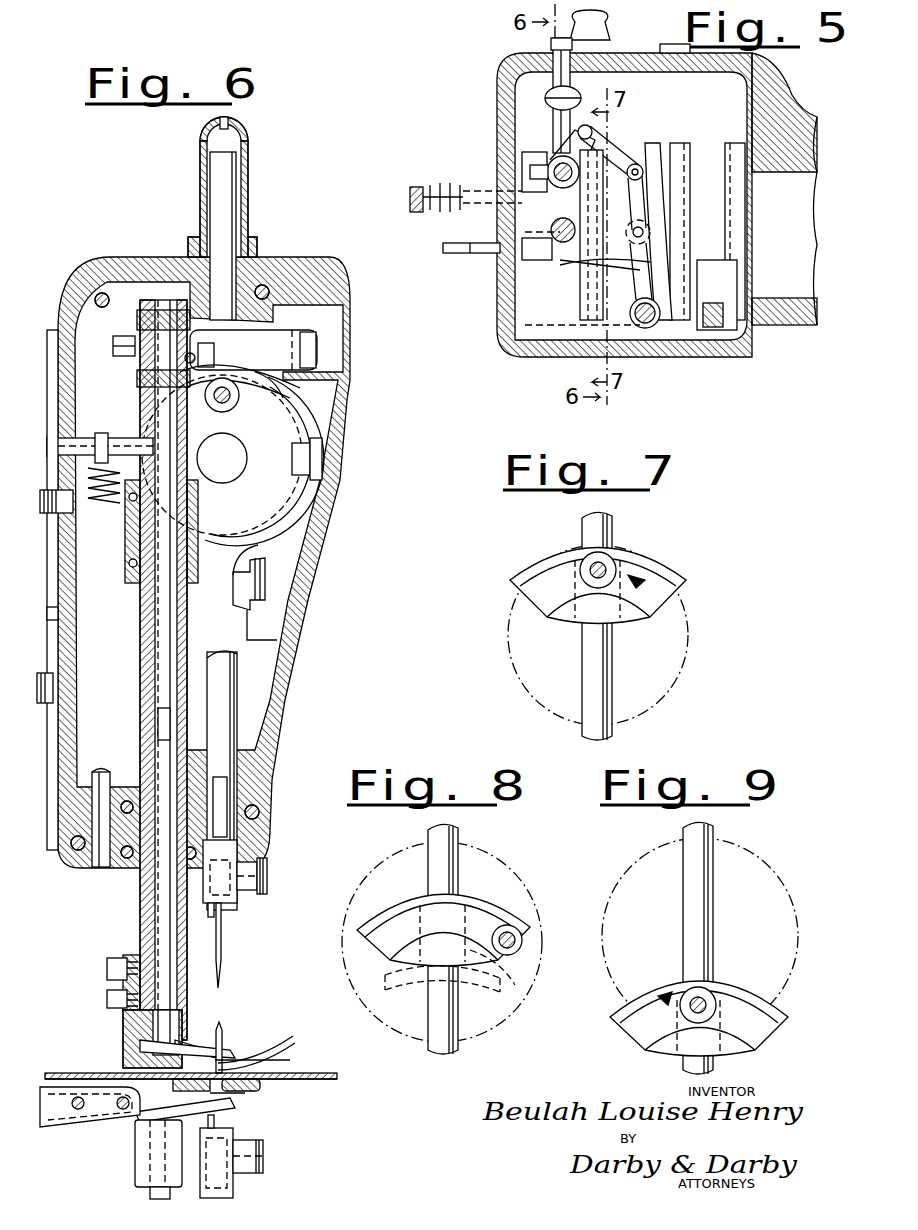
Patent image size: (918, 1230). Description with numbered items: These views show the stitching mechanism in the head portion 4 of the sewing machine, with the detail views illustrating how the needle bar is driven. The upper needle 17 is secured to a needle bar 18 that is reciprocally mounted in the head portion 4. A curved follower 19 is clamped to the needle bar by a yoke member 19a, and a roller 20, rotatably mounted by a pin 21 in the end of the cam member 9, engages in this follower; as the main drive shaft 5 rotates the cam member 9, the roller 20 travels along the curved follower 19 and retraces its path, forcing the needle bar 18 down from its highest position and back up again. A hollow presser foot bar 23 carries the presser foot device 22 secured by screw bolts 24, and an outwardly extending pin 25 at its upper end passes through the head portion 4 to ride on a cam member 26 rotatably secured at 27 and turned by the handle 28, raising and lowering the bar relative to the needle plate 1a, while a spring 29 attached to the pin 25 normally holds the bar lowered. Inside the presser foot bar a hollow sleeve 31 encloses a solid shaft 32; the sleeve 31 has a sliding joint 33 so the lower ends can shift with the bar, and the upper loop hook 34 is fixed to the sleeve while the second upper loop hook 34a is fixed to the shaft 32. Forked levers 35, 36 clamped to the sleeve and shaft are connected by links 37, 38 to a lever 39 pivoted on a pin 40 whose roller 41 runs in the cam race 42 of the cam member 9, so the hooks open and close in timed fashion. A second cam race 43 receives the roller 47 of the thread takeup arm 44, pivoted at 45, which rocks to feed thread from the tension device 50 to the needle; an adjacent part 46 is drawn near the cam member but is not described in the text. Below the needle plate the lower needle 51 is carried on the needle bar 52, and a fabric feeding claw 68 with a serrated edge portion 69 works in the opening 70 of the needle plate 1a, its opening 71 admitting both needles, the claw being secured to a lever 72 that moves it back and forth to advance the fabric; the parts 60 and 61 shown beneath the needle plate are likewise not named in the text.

In FIG. 6, the needle plate 1a is at (50, 1073).
In FIG. 6, the head portion 4 is at (295, 662).
In FIG. 6, the main drive shaft 5 is at (233, 472).
In FIG. 5, the main drive shaft 5 is at (805, 186).
In FIG. 6, the cam member 9 is at (307, 424).
In FIG. 5, the cam member 9 is at (752, 232).
In FIG. 7, the cam member 9 is at (688, 617).
In FIG. 8, the cam member 9 is at (480, 852).
In FIG. 9, the cam member 9 is at (740, 852).
In FIG. 6, the upper needle 17 is at (222, 940).
In FIG. 6, the needle bar 18 is at (237, 702).
In FIG. 5, the needle bar 18 is at (563, 246).
In FIG. 7, the needle bar 18 is at (612, 670).
In FIG. 8, the needle bar 18 is at (428, 836).
In FIG. 9, the needle bar 18 is at (713, 890).
In FIG. 6, the curved follower 19 is at (240, 381).
In FIG. 5, the curved follower 19 is at (590, 320).
In FIG. 7, the curved follower 19 is at (683, 577).
In FIG. 8, the curved follower 19 is at (490, 902).
In FIG. 9, the curved follower 19 is at (785, 1010).
In FIG. 5, the yoke member 19a is at (535, 258).
In FIG. 7, the yoke member 19a is at (575, 612).
In FIG. 8, the yoke member 19a is at (415, 910).
In FIG. 9, the yoke member 19a is at (668, 1045).
In FIG. 6, the roller 20 is at (230, 400).
In FIG. 5, the roller 20 is at (585, 290).
In FIG. 7, the roller 20 is at (614, 565).
In FIG. 8, the roller 20 is at (517, 926).
In FIG. 9, the roller 20 is at (708, 993).
In FIG. 6, the pin 21 is at (218, 402).
In FIG. 5, the pin 21 is at (662, 218).
In FIG. 7, the pin 21 is at (590, 565).
In FIG. 8, the pin 21 is at (521, 940).
In FIG. 9, the pin 21 is at (690, 1000).
In FIG. 6, the presser foot device 22 is at (266, 1050).
In FIG. 6, the presser foot bar 23 is at (187, 617).
In FIG. 6, the screw bolts 24 is at (107, 1000).
In FIG. 6, the pin 25 is at (82, 438).
In FIG. 5, the pin 25 is at (553, 48).
In FIG. 6, the cam member 26 is at (56, 598).
In FIG. 5, the cam member 26 is at (455, 254).
In FIG. 6, the pivot 27 is at (52, 515).
In FIG. 6, the handle 28 is at (47, 685).
In FIG. 6, the spring 29 is at (100, 505).
In FIG. 5, the spring 29 is at (548, 97).
In FIG. 6, the hollow sleeve 31 is at (150, 612).
In FIG. 5, the hollow sleeve 31 is at (548, 178).
In FIG. 6, the solid shaft 32 is at (165, 633).
In FIG. 6, the sliding joint 33 is at (163, 720).
In FIG. 6, the upper loop hook 34 is at (180, 1040).
In FIG. 6, the second upper loop hook 34a is at (175, 1045).
In FIG. 6, the forked lever 35 is at (142, 338).
In FIG. 5, the forked lever 35 is at (555, 160).
In FIG. 6, the forked lever 36 is at (212, 332).
In FIG. 5, the forked lever 36 is at (540, 228).
In FIG. 5, the link 37 is at (592, 150).
In FIG. 5, the link 38 is at (605, 178).
In FIG. 6, the lever 39 is at (267, 333).
In FIG. 5, the lever 39 is at (648, 205).
In FIG. 6, the pin 40 is at (313, 337).
In FIG. 5, the pin 40 is at (648, 328).
In FIG. 6, the roller 41 is at (275, 385).
In FIG. 5, the roller 41 is at (650, 238).
In FIG. 5, the cam race 42 is at (640, 190).
In FIG. 5, the cam race 43 is at (705, 165).
In FIG. 6, the thread takeup arm 44 is at (260, 590).
In FIG. 5, the thread takeup arm 44 is at (692, 333).
In FIG. 6, the pivot 45 is at (265, 572).
In FIG. 6, the ring 46 is at (300, 508).
In FIG. 6, the roller 47 is at (315, 482).
In FIG. 5, the tension device 50 is at (450, 182).
In FIG. 6, the lower needle 51 is at (232, 1036).
In FIG. 6, the needle bar 52 is at (237, 1182).
In FIG. 6, the cylinder 60 is at (185, 1125).
In FIG. 6, the lever 61 is at (200, 1106).
In FIG. 6, the fabric feeding claw 68 is at (255, 1087).
In FIG. 6, the serrated edge portion 69 is at (250, 1072).
In FIG. 6, the opening 70 is at (300, 1075).
In FIG. 6, the opening 71 is at (232, 1096).
In FIG. 6, the lever 72 is at (60, 1125).